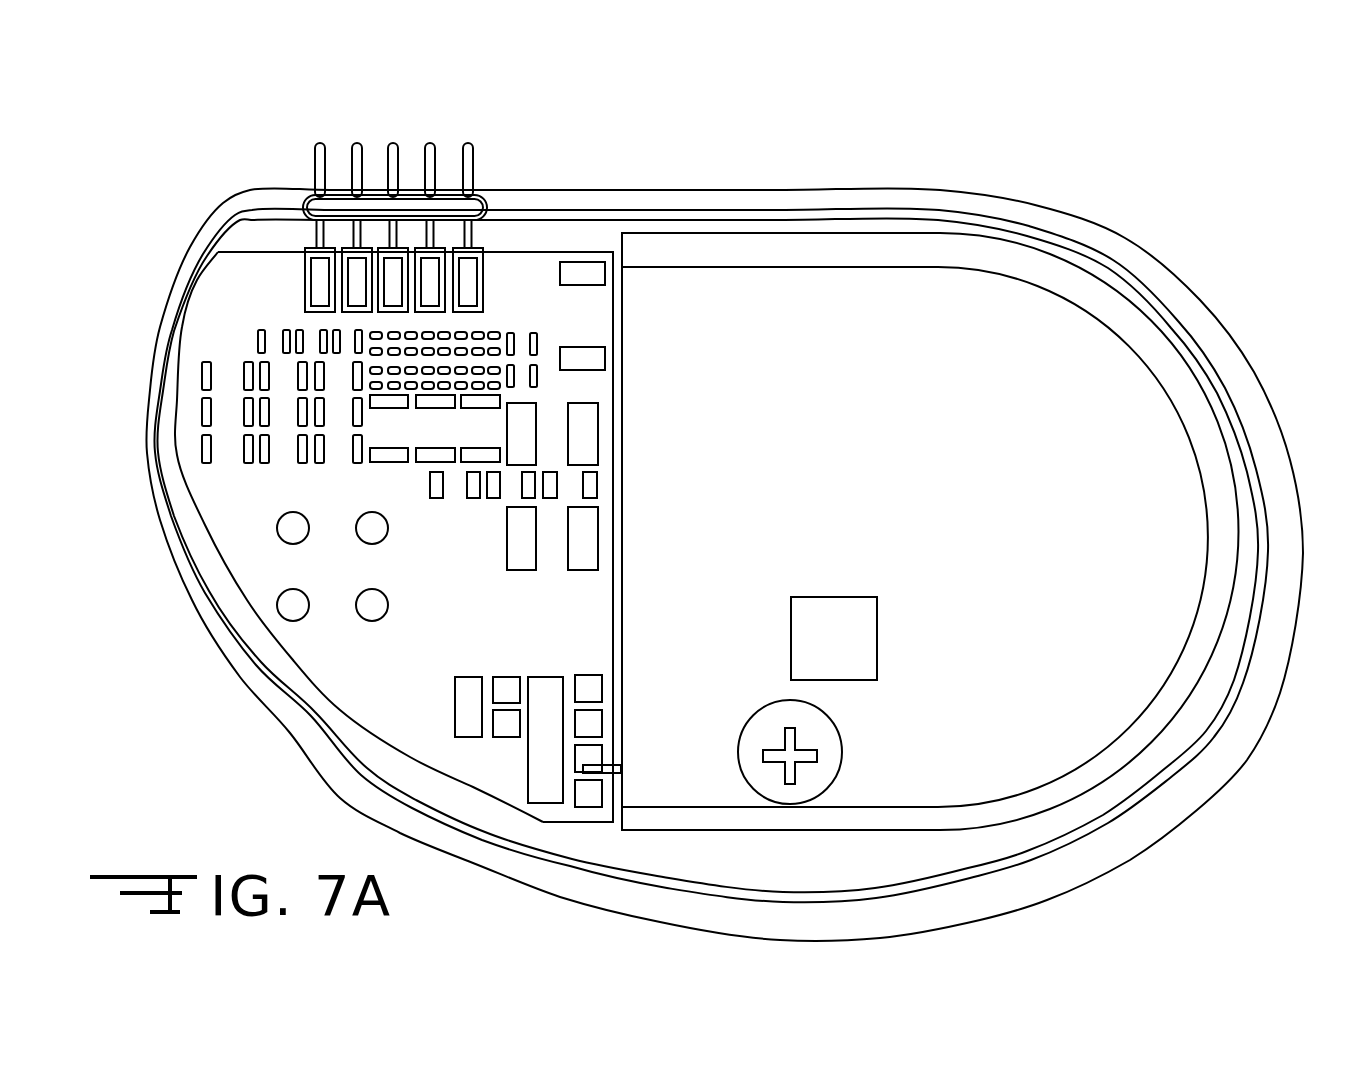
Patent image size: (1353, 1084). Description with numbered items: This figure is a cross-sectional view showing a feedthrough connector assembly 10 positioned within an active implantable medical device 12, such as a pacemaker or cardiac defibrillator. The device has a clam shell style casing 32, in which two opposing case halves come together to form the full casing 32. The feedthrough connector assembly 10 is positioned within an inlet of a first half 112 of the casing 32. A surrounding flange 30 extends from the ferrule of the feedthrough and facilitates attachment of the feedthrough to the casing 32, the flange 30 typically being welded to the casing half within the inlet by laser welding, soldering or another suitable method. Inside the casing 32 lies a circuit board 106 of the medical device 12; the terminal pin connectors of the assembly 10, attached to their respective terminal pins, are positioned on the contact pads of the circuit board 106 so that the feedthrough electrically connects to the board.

The feedthrough connector assembly 10 is at (402, 126).
The active implantable medical device 12 is at (887, 158).
The flange 30 is at (478, 186).
The casing 32 is at (613, 198).
The circuit board 106 is at (538, 287).
The first half of the casing 112 is at (1078, 227).